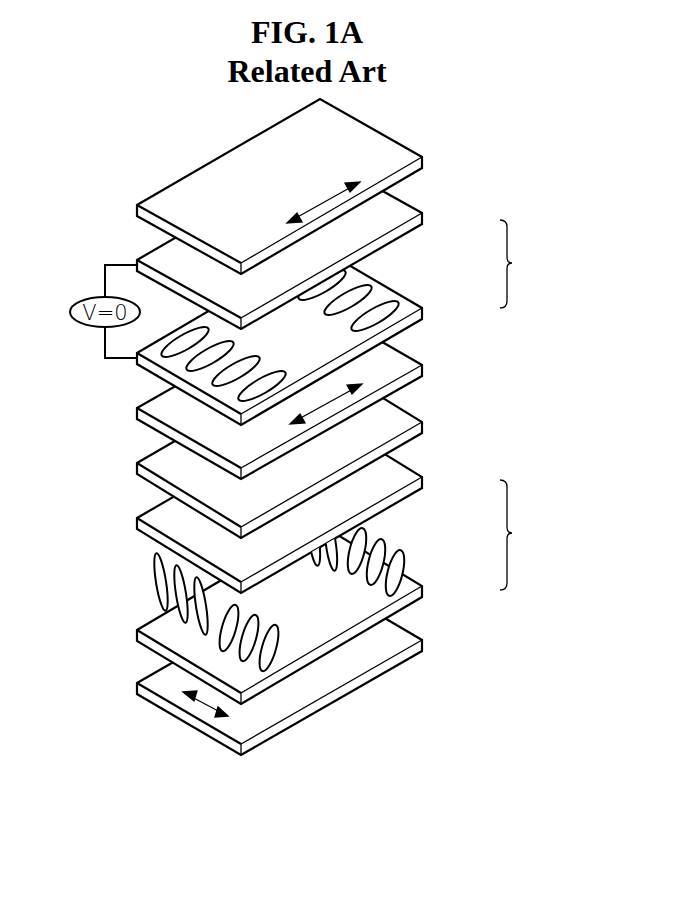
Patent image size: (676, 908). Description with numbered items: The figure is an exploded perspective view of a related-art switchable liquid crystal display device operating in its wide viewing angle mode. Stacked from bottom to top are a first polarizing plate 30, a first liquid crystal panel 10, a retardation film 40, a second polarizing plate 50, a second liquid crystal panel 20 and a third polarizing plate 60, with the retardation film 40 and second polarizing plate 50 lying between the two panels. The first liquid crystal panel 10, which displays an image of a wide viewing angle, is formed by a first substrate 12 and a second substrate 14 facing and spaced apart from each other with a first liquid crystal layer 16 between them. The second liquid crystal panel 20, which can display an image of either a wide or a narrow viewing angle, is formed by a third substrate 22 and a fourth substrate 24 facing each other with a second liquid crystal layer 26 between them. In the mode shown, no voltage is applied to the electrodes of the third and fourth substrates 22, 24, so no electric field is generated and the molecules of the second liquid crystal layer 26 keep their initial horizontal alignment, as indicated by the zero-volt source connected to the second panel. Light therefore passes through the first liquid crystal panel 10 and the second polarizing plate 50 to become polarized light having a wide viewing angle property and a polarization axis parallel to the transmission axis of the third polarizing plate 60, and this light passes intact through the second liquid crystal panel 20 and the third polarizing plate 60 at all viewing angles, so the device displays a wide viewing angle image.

The first liquid crystal panel 10 is at (525, 535).
The first substrate 12 is at (422, 593).
The second substrate 14 is at (422, 484).
The first liquid crystal layer 16 is at (400, 540).
The second liquid crystal panel 20 is at (525, 264).
The third substrate 22 is at (422, 315).
The fourth substrate 24 is at (422, 220).
The second liquid crystal layer 26 is at (418, 276).
The first polarizing plate 30 is at (422, 647).
The retardation film 40 is at (422, 429).
The second polarizing plate 50 is at (422, 372).
The third polarizing plate 60 is at (422, 164).